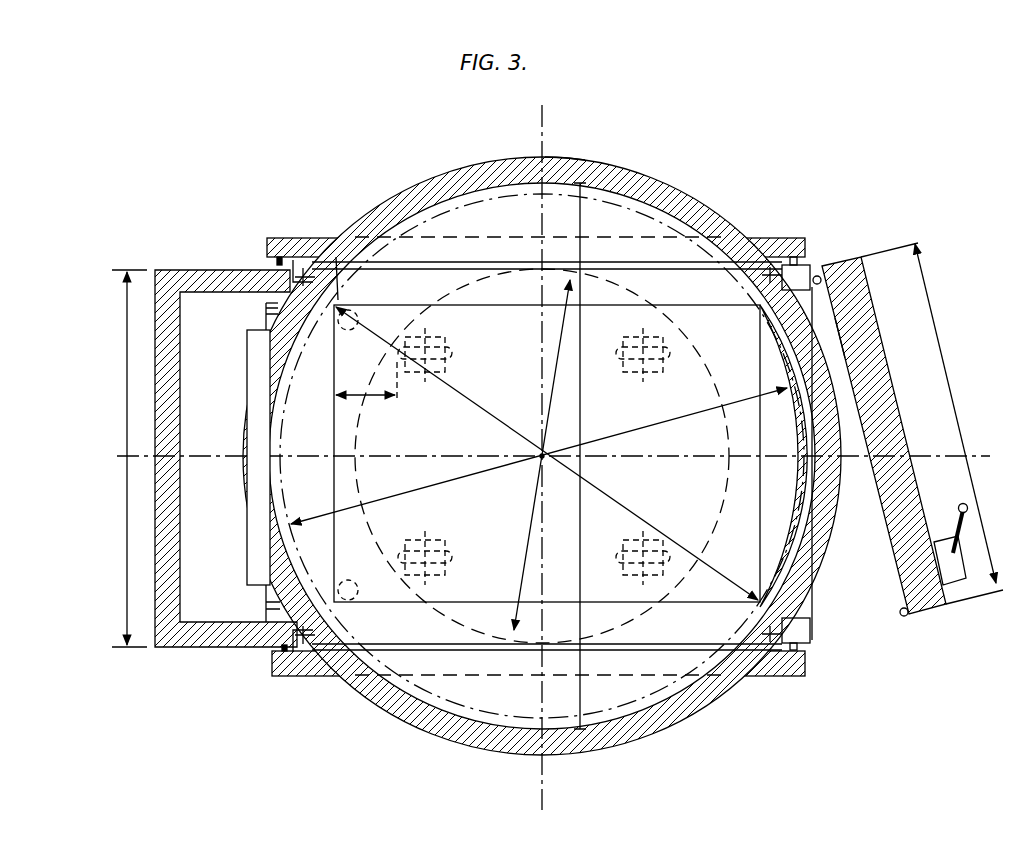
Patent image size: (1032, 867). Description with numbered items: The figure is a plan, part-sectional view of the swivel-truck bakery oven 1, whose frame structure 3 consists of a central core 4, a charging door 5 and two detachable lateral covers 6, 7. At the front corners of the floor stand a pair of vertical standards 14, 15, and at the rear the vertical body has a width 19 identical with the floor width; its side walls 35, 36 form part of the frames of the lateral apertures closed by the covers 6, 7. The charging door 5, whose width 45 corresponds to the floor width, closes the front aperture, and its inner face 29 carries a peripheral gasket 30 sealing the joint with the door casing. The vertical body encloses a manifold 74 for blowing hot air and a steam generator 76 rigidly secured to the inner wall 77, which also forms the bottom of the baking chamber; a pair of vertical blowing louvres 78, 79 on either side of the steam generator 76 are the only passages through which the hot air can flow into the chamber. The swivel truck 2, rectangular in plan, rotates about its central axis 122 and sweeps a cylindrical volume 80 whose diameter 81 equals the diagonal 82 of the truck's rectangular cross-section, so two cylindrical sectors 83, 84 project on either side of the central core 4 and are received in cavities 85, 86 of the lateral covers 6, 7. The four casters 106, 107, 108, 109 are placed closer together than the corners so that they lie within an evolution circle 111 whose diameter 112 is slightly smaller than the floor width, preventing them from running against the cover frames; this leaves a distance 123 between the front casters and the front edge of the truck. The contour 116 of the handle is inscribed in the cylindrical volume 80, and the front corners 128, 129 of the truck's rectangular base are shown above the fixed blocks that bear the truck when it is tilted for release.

The swivel-truck bakery oven 1 is at (655, 162).
The swivel truck 2 is at (762, 614).
The frame structure 3 is at (579, 226).
The central core 4 is at (806, 522).
The charging door 5 is at (862, 320).
The detachable lateral cover 6 is at (557, 758).
The detachable lateral cover 7 is at (578, 140).
The vertical standard 14 is at (813, 640).
The vertical standard 15 is at (786, 266).
The width of vertical body 19 is at (128, 325).
The inner face of charging door 29 is at (864, 436).
The peripheral gasket 30 is at (905, 617).
The side wall of vertical body 35 is at (218, 648).
The side wall of vertical body 36 is at (186, 268).
The width of charging door 45 is at (933, 322).
The manifold 74 is at (212, 300).
The steam generator 76 is at (250, 556).
The inner wall of vertical body 77 is at (279, 313).
The vertical blowing louvre 78 is at (281, 625).
The vertical blowing louvre 79 is at (264, 305).
The cylindrical volume 80 is at (306, 452).
The diameter of cylindrical volume 81 is at (636, 428).
The diagonal of swivel truck 82 is at (468, 405).
The cylindrical sector 83 is at (500, 706).
The cylindrical sector 84 is at (470, 215).
The cavity of lateral cover 85 is at (700, 676).
The cavity of lateral cover 86 is at (676, 215).
The caster 106 is at (413, 577).
The caster 107 is at (418, 337).
The caster 108 is at (650, 577).
The caster 109 is at (636, 337).
The evolution circle 111 is at (500, 275).
The diameter of evolution circle 112 is at (528, 510).
The contour of handle 116 is at (796, 545).
The central axis 122 is at (540, 460).
The distance 123 is at (364, 378).
The front corner of rectangular base 128 is at (346, 655).
The front corner of rectangular base 129 is at (337, 262).